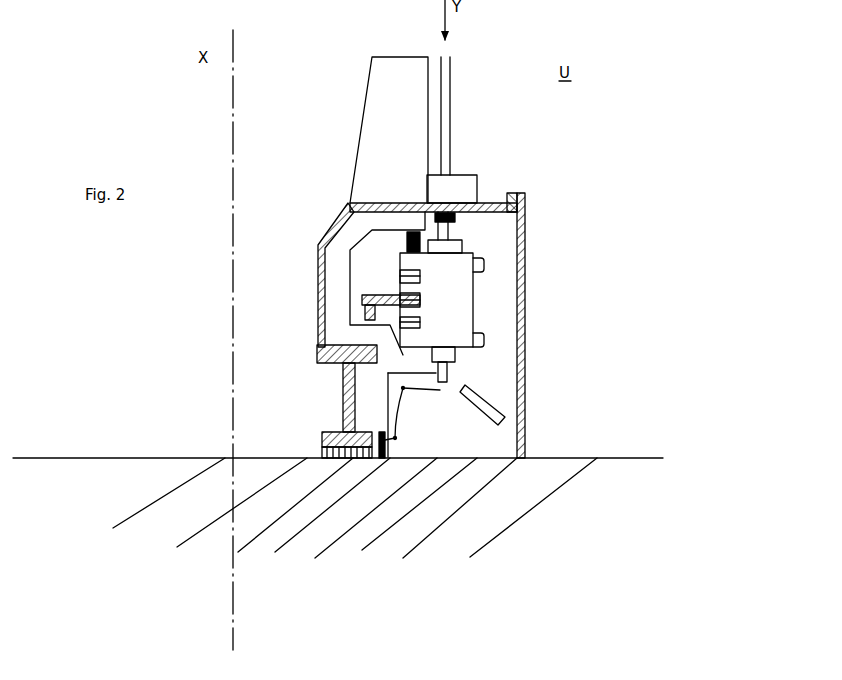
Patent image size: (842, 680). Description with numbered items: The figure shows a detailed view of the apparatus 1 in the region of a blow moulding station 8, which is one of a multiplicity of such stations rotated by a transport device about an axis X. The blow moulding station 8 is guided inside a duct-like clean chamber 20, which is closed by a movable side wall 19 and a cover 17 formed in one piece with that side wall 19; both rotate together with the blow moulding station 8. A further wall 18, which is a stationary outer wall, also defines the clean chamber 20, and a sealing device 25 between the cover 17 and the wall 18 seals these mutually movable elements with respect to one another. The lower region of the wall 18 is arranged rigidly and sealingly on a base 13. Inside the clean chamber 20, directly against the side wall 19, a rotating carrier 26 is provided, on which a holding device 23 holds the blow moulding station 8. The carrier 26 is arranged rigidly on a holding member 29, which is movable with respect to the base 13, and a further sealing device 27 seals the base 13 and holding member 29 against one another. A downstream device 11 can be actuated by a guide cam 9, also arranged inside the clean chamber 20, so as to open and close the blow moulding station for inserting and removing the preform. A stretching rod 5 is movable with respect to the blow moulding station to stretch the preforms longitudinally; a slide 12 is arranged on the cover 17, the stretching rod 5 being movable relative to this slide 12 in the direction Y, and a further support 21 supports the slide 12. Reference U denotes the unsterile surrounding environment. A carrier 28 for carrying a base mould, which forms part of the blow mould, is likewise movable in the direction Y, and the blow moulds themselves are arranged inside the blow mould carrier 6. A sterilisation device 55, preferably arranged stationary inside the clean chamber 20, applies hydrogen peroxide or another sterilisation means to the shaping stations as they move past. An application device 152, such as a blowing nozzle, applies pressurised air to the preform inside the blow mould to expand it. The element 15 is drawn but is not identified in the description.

The apparatus 1 is at (325, 115).
The stretching rod 5 is at (442, 128).
The blow mould carrier 6 is at (463, 318).
The blow moulding station 8 is at (463, 283).
The guide cam 9 is at (385, 440).
The downstream device 11 is at (527, 443).
The slide 12 is at (483, 168).
The base 13 is at (560, 500).
The fastener 15 is at (460, 218).
The cover 17 is at (397, 203).
The wall 18 is at (525, 263).
The side wall 19 is at (318, 292).
The clean chamber 20 is at (492, 395).
The further support 21 is at (413, 95).
The holding device 23 is at (382, 295).
The sealing device 25 is at (527, 193).
The carrier 26 is at (338, 333).
The further sealing device 27 is at (322, 447).
The carrier for carrying a base mould 28 is at (447, 375).
The holding member 29 is at (348, 412).
The sterilisation device 55 is at (518, 442).
The application device 152 is at (472, 247).